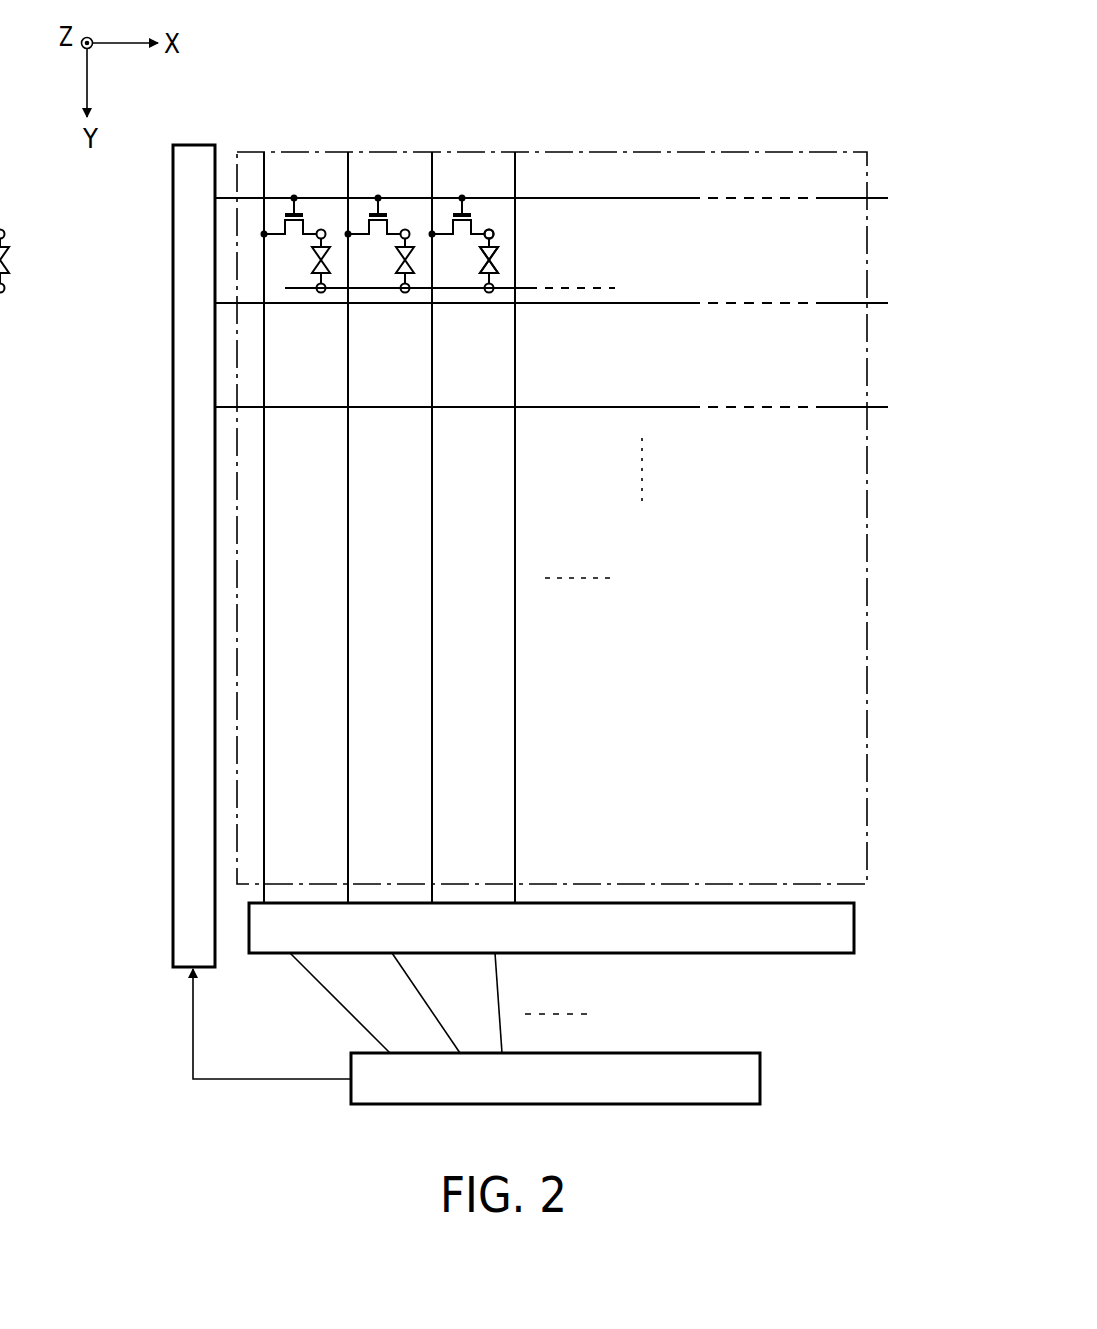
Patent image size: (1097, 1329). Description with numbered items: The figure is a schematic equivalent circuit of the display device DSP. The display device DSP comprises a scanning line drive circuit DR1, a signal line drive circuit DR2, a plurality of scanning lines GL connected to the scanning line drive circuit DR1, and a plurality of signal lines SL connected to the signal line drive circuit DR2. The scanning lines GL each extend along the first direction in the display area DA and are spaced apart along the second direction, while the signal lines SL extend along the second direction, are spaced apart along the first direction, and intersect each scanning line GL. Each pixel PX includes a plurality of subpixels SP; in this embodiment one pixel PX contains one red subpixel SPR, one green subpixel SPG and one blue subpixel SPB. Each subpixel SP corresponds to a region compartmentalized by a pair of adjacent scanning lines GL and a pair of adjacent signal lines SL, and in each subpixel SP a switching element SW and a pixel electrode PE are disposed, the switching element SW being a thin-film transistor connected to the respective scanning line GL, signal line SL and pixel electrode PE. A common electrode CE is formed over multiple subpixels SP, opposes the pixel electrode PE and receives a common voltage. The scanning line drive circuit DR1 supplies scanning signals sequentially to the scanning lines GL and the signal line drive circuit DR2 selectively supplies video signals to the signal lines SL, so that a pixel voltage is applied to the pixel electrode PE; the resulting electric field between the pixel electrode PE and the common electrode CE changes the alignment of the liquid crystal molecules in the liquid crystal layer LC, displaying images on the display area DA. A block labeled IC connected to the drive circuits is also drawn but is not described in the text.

The display device DSP is at (866, 92).
The display area DA is at (724, 152).
The pixel PX is at (520, 95).
The red subpixel SPR is at (317, 213).
The green subpixel SPG is at (402, 213).
The blue subpixel SPB is at (488, 213).
The subpixel SP is at (303, 294).
The switching element SW is at (473, 220).
The pixel electrode PE is at (494, 234).
The liquid crystal layer LC is at (498, 268).
The common electrode CE is at (488, 293).
The scanning line GL is at (661, 200).
The signal line SL is at (266, 675).
The scanning line drive circuit DR1 is at (172, 457).
The signal line drive circuit DR2 is at (856, 927).
The driver IC chip IC is at (762, 1077).